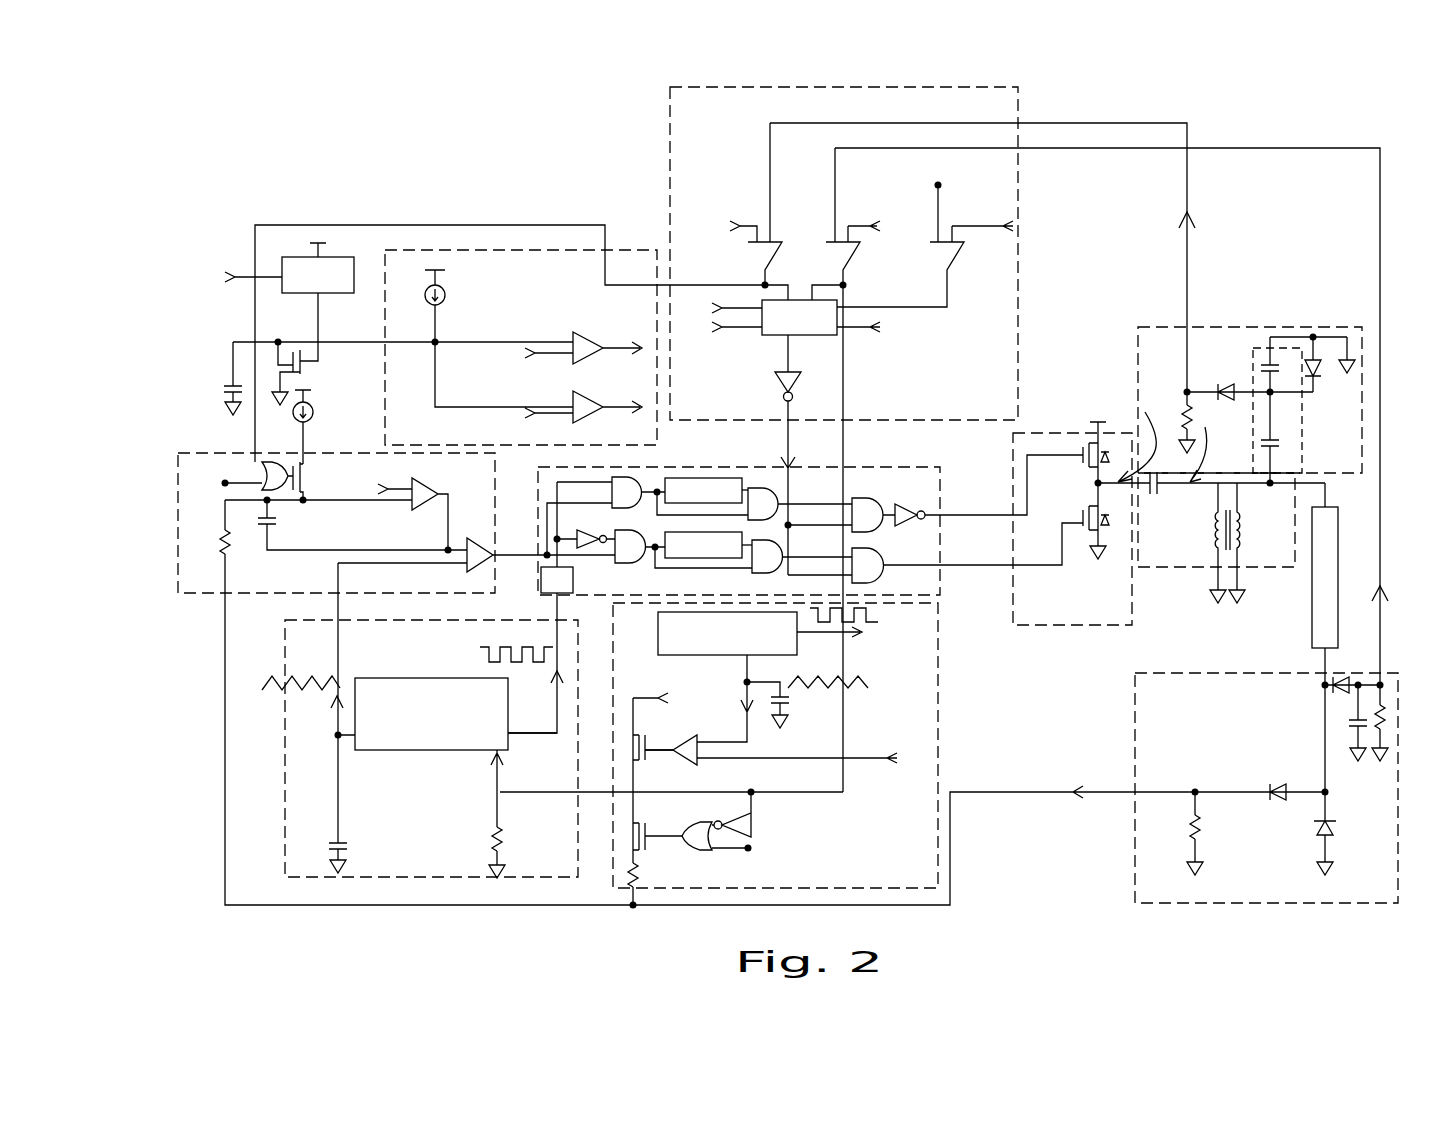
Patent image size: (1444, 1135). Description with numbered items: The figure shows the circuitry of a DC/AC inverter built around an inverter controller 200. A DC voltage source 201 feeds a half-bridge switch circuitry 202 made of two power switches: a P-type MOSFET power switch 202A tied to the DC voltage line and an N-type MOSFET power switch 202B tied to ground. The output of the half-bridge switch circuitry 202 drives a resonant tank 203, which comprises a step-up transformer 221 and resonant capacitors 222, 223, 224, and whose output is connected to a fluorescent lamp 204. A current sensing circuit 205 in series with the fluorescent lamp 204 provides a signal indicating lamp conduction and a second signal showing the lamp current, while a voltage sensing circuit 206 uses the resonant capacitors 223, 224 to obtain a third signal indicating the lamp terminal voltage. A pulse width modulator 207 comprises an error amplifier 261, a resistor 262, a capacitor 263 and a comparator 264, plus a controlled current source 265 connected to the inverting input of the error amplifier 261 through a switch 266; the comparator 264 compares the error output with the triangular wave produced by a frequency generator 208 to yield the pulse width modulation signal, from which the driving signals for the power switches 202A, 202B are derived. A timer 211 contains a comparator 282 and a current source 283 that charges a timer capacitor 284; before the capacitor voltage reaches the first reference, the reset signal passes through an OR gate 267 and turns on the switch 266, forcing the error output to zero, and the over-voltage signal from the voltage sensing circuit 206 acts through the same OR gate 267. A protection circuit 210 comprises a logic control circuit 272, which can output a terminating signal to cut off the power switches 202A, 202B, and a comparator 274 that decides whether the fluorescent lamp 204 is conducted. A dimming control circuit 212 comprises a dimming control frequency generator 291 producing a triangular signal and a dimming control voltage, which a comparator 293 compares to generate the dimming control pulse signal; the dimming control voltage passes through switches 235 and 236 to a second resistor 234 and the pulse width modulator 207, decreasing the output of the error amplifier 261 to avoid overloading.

The inverter controller 200 is at (1364, 116).
The DC voltage source 201 is at (1093, 412).
The half-bridge switch circuitry 202 is at (1049, 628).
The power switch 202A is at (1068, 468).
The power switch 202B is at (1093, 538).
The resonant tank 203 is at (1168, 565).
The fluorescent lamp 204 is at (1330, 567).
The current sensing circuit 205 is at (1362, 890).
The voltage sensing circuit 206 is at (1227, 313).
The pulse width modulator 207 is at (195, 592).
The frequency generator 208 is at (303, 780).
The protection circuit 210 is at (1028, 108).
The timer 211 is at (404, 272).
The dimming control circuit 212 is at (905, 862).
The step-up transformer 221 is at (1250, 543).
The resonant capacitor 222 is at (1211, 500).
The resonant capacitor 223 is at (1286, 412).
The resonant capacitor 224 is at (1250, 377).
The second resistor 234 is at (658, 881).
The switch 235 is at (631, 747).
The switch 236 is at (636, 837).
The error amplifier 261 is at (446, 505).
The resistor 262 is at (204, 550).
The capacitor 263 is at (353, 525).
The comparator 264 is at (442, 541).
The controlled current source 265 is at (326, 427).
The switch 266 is at (305, 474).
The OR gate 267 is at (262, 474).
The logic control circuit 272 is at (799, 317).
The comparator 274 is at (848, 264).
The comparator 282 is at (593, 342).
The current source 283 is at (460, 306).
The timer capacitor 284 is at (212, 378).
The dimming control frequency generator 291 is at (727, 633).
The comparator 293 is at (683, 763).